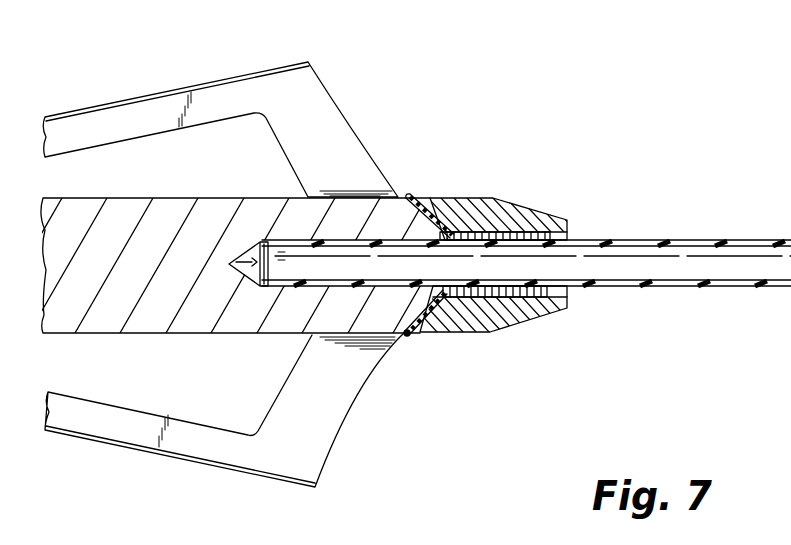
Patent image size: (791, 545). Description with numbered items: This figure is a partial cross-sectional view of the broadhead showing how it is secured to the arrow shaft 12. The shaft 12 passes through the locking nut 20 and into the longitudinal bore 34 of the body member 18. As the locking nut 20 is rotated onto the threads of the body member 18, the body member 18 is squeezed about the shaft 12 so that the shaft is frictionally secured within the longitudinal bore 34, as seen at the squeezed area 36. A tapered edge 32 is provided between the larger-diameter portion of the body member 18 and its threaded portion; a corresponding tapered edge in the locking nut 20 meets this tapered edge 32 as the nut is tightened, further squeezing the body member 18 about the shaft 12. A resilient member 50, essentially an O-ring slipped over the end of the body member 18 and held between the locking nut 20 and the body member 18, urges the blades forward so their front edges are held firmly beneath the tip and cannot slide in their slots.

The shaft 12 is at (700, 238).
The body member 18 is at (157, 333).
The locking nut 20 is at (532, 320).
The tapered edge 32 is at (422, 207).
The longitudinal bore 34 is at (253, 246).
The frictional securing area 36 is at (516, 232).
The resilient member 50 is at (407, 337).